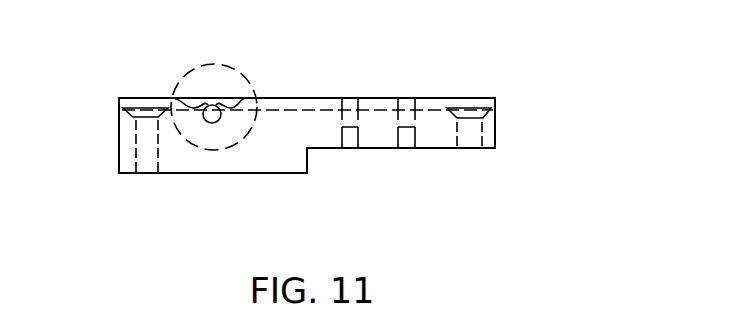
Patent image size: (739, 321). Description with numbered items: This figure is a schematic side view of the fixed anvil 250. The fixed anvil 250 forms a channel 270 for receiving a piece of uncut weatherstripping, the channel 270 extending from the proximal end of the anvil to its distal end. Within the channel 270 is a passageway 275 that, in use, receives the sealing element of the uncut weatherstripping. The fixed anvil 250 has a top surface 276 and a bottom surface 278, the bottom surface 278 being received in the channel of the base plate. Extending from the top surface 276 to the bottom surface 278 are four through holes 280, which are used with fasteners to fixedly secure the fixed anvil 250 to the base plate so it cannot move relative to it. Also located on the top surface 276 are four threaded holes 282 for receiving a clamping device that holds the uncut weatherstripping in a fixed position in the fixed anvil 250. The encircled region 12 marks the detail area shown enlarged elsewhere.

The tool 12 is at (197, 67).
The fixed anvil 250 is at (556, 117).
The channel 270 is at (215, 105).
The passageway 275 is at (220, 123).
The top surface 276 is at (440, 98).
The bottom surface 278 is at (290, 173).
The through holes 280 is at (135, 146).
The threaded holes 282 is at (358, 127).